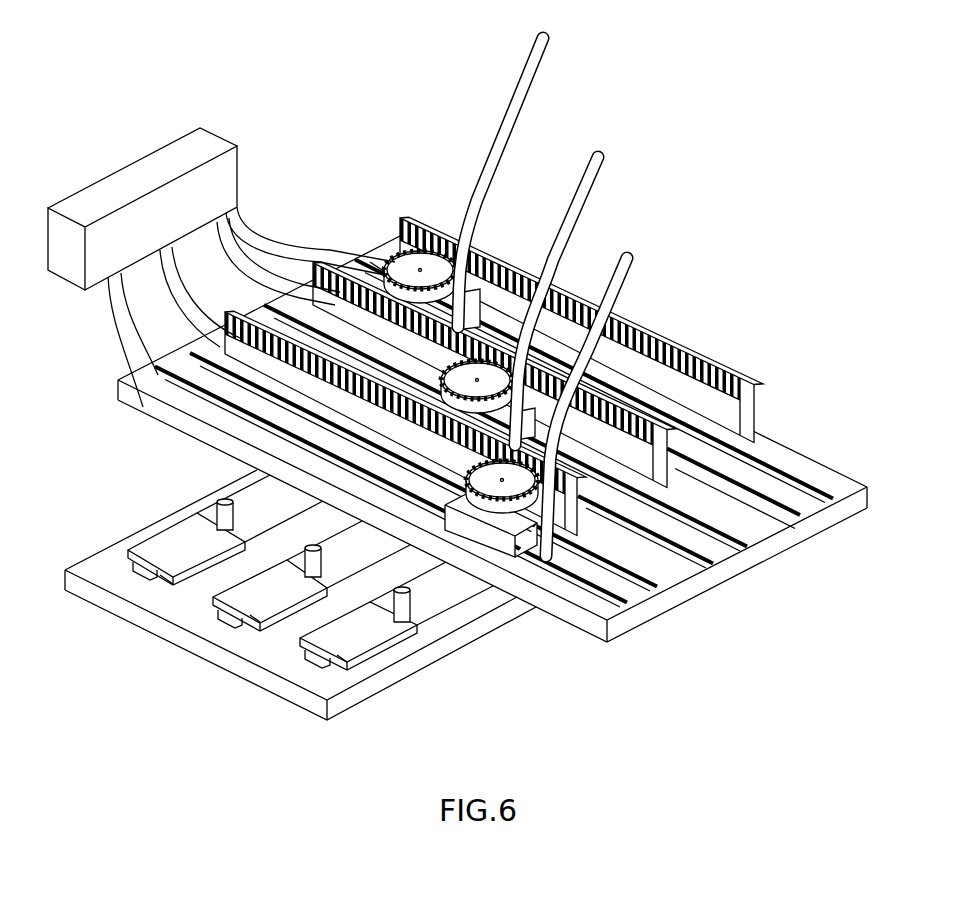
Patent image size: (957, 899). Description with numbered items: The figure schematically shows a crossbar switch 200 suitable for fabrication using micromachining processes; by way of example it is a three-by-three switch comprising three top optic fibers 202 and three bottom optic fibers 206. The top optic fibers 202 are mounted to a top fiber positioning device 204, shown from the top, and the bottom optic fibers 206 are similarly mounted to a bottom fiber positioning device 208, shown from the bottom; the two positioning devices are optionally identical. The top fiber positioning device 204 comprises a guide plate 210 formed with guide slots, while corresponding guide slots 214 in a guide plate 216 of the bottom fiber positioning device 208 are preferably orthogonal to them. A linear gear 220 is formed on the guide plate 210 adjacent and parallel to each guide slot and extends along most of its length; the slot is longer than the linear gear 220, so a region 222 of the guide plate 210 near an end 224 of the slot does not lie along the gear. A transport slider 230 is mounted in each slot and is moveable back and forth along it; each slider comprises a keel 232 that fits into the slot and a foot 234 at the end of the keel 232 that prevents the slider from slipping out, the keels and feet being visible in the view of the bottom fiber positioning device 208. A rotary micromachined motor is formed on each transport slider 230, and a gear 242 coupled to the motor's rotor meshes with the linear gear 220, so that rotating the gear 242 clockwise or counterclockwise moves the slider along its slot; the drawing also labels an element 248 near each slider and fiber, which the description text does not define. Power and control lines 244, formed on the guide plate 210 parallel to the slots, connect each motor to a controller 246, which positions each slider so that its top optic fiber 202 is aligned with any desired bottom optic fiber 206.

The crossbar switch 200 is at (407, 83).
The top optic fibers 202 is at (590, 165).
The top fiber positioning device 204 is at (790, 305).
The bottom optic fibers 206 is at (225, 507).
The bottom fiber positioning device 208 is at (156, 737).
The guide plate 210 is at (862, 420).
The guide slots 214 is at (135, 575).
The guide plate 216 is at (300, 605).
The linear gear 220 is at (688, 347).
The region 222 is at (843, 485).
The end 224 is at (836, 500).
The transport slider 230 is at (378, 268).
The keel 232 is at (318, 665).
The foot 234 is at (215, 605).
The gear 242 is at (423, 262).
The power and control lines 244 is at (158, 380).
The controller 246 is at (216, 138).
The carriages 248 is at (507, 293).